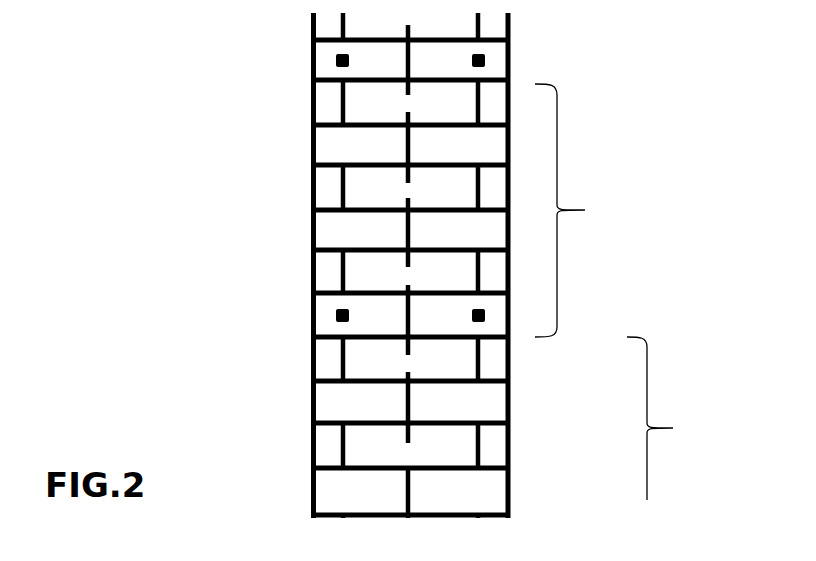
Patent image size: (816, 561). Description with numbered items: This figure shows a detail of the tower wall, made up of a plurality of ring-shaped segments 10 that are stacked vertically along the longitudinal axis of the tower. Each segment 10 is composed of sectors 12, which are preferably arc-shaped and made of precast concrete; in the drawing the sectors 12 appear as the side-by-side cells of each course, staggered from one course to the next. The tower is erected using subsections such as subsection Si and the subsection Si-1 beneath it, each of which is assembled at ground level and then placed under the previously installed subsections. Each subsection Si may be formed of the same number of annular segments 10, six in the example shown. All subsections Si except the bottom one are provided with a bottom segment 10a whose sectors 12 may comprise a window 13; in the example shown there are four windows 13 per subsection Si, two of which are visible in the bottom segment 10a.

The segment 10 is at (314, 102).
The bottom segment 10a is at (325, 307).
The sector 12 is at (327, 187).
The window 13 is at (335, 320).
The subsection Si is at (576, 210).
The subsection Si-1 is at (673, 418).